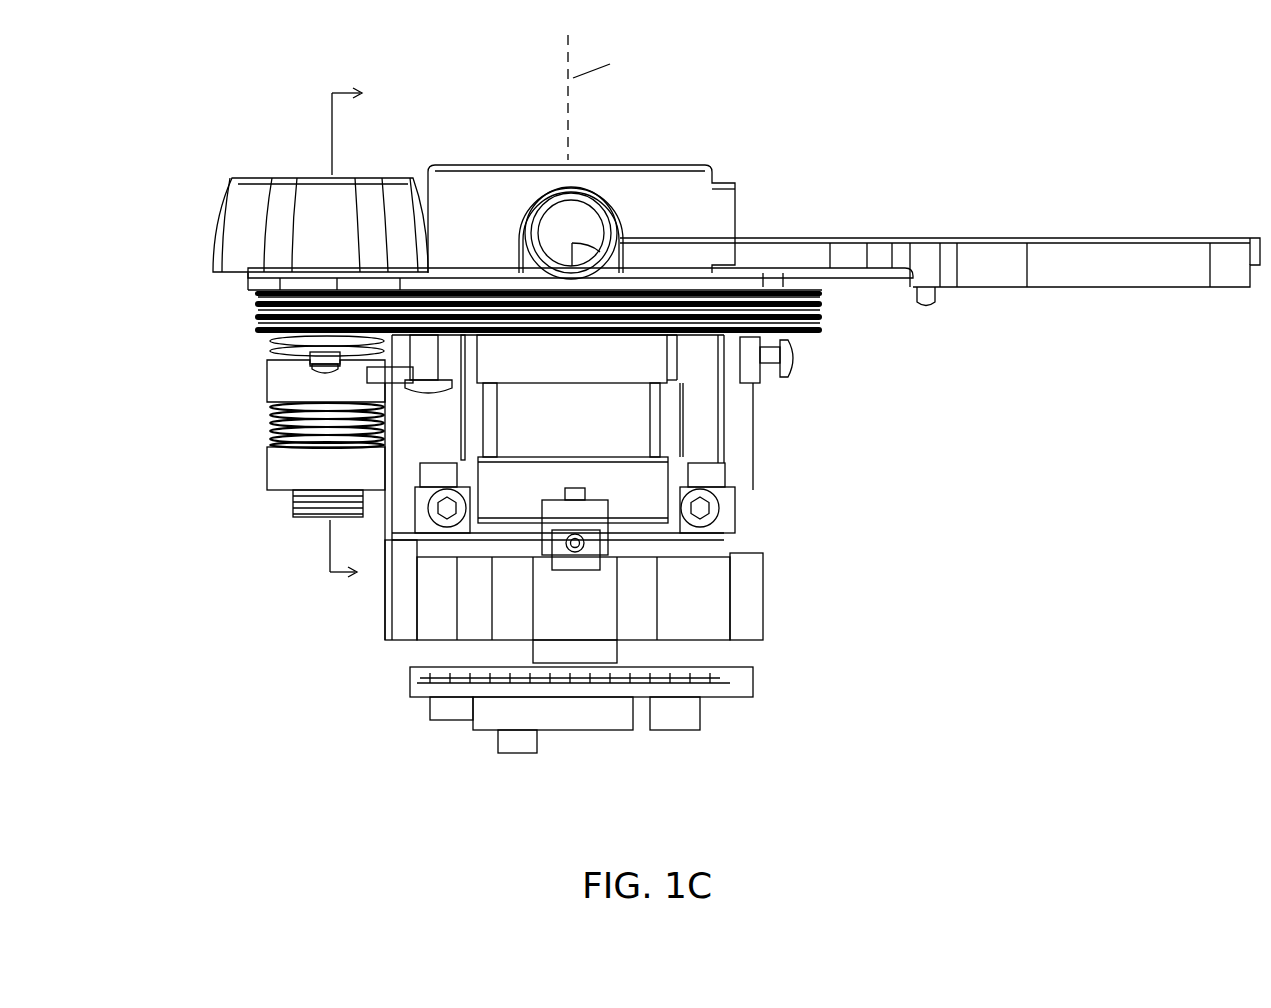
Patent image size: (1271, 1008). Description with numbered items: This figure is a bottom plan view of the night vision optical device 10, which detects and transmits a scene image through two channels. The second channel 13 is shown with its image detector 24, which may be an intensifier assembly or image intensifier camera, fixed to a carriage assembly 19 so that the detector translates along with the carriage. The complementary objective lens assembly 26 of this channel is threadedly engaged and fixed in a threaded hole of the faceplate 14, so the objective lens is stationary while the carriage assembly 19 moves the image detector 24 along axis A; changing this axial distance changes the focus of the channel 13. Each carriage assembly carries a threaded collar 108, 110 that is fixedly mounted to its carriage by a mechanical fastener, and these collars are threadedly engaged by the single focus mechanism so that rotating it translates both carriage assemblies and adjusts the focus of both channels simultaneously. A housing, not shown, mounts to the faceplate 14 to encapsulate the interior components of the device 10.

The optical device 10 is at (1120, 485).
The second channel 13 is at (724, 430).
The faceplate 14 is at (1102, 260).
The carriage assembly 19 is at (706, 510).
The image detector 24 is at (498, 617).
The objective lens assembly 26 is at (610, 410).
The threaded collar 108 is at (283, 372).
The threaded collar 110 is at (283, 466).